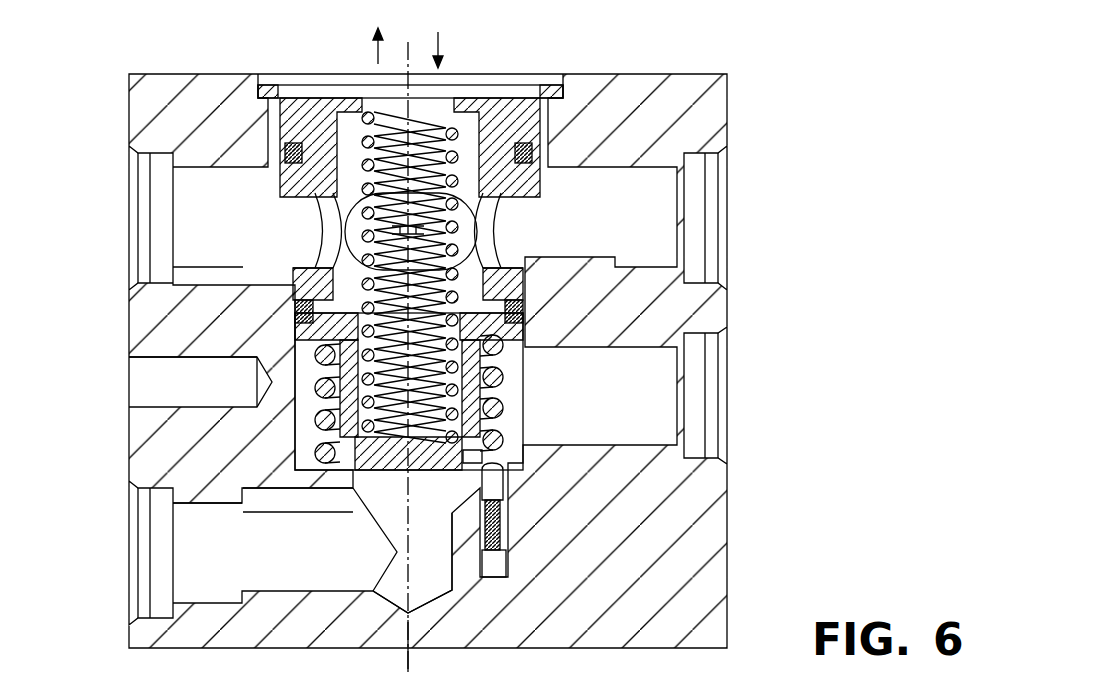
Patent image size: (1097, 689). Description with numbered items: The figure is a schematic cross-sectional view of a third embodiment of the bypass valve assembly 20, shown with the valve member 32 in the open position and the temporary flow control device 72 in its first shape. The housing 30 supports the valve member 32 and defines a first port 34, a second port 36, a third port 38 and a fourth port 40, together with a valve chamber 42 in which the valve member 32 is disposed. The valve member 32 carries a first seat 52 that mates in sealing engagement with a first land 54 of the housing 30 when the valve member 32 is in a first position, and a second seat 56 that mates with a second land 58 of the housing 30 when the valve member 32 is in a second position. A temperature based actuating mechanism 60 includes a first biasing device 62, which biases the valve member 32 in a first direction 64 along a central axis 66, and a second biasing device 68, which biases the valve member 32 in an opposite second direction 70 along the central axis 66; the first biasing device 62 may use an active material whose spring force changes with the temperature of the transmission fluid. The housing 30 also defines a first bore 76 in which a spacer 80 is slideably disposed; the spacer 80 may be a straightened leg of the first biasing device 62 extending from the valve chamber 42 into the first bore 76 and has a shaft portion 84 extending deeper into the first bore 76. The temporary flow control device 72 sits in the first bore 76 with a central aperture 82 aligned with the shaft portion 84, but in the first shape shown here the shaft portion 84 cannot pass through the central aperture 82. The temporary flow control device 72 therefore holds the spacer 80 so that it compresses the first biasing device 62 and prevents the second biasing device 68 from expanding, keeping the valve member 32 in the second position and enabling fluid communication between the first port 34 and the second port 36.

The bypass valve assembly 20 is at (693, 56).
The housing 30 is at (712, 108).
The valve member 32 is at (560, 455).
The first port 34 is at (724, 335).
The second port 36 is at (140, 598).
The third port 38 is at (147, 152).
The fourth port 40 is at (712, 152).
The valve chamber 42 is at (505, 355).
The first seat 52 is at (300, 475).
The first land 54 is at (367, 490).
The second seat 56 is at (333, 320).
The second land 58 is at (337, 303).
The temperature based actuating mechanism 60 is at (465, 278).
The first biasing device 62 is at (317, 400).
The first direction 64 is at (378, 55).
The central axis 66 is at (406, 640).
The second biasing device 68 is at (487, 182).
The second direction 70 is at (440, 42).
The temporary flow control device 72 is at (505, 540).
The first bore 76 is at (445, 565).
The spacer 80 is at (515, 468).
The central aperture 82 is at (490, 535).
The shaft portion 84 is at (508, 505).